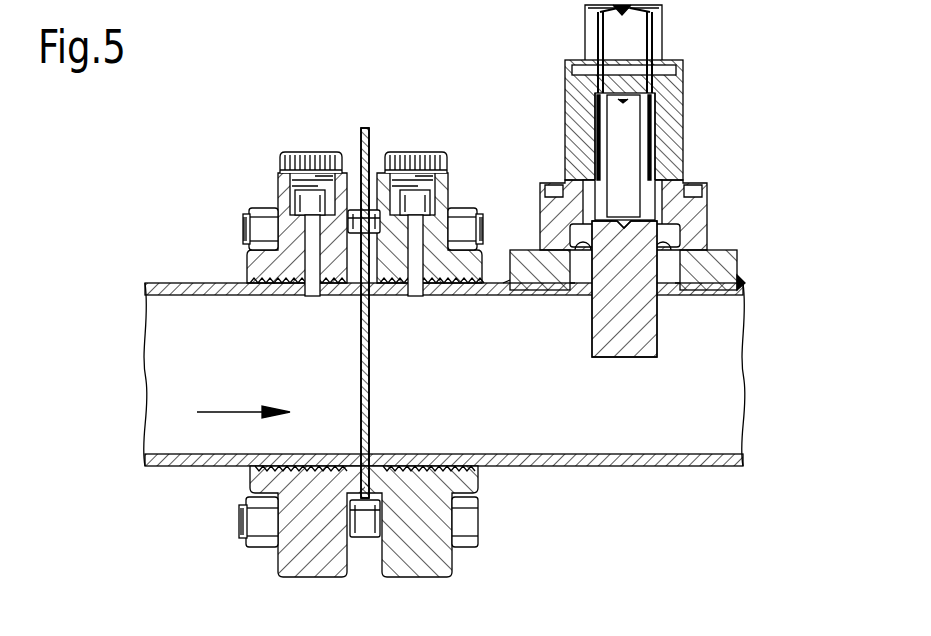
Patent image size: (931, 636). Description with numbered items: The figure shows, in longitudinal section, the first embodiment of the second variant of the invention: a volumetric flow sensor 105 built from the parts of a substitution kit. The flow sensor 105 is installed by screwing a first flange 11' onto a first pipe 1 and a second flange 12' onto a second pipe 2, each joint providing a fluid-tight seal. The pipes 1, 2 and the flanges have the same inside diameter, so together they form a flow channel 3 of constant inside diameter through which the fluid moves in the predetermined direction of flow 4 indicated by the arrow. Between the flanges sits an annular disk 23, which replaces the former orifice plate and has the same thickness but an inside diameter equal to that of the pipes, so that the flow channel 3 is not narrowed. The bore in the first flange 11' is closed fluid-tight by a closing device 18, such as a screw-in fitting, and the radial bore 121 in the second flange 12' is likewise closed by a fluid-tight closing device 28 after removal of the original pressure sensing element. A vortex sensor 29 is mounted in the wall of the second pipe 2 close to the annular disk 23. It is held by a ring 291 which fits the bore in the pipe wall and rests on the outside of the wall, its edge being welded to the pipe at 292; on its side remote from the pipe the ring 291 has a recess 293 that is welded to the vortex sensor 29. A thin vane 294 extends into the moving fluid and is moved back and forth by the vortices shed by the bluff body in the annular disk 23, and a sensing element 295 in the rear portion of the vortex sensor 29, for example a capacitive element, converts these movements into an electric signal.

The flow sensor 105 is at (180, 157).
The first pipe 1 is at (165, 283).
The second pipe 2 is at (748, 289).
The flow channel 3 is at (735, 361).
The direction of flow 4 is at (230, 413).
The first flange 11' is at (346, 337).
The second flange 12' is at (448, 200).
The radial bore 121 is at (417, 247).
The closing device 18 is at (305, 152).
The closing device 28 is at (426, 152).
The annular disk 23 is at (370, 128).
The vortex sensor 29 is at (684, 92).
The sensing element 295 is at (630, 134).
The recess 293 is at (700, 215).
The ring 291 is at (720, 247).
The weld 292 is at (745, 276).
The vane 294 is at (605, 330).